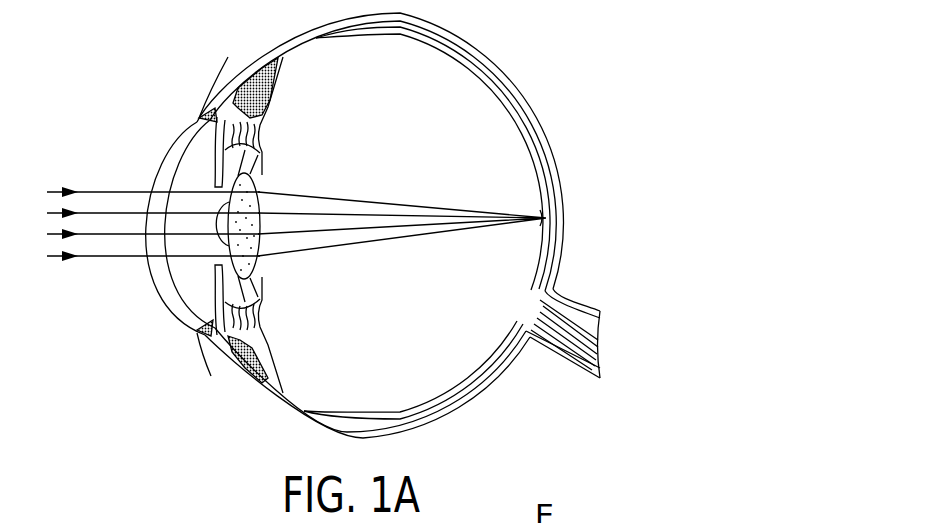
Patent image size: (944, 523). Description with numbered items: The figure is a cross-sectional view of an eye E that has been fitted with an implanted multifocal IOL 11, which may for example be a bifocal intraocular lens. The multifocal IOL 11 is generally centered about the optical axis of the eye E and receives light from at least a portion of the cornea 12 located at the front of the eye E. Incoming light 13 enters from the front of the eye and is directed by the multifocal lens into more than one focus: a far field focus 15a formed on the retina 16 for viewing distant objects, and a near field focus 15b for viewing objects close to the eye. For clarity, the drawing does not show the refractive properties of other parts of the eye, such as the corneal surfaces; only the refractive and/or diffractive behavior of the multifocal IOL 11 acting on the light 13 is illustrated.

The eye E is at (575, 90).
The multifocal IOL 11 is at (248, 180).
The cornea 12 is at (180, 306).
The light 13 is at (105, 153).
The far field focus 15a is at (548, 218).
The near field focus 15b is at (424, 223).
The retina 16 is at (542, 175).